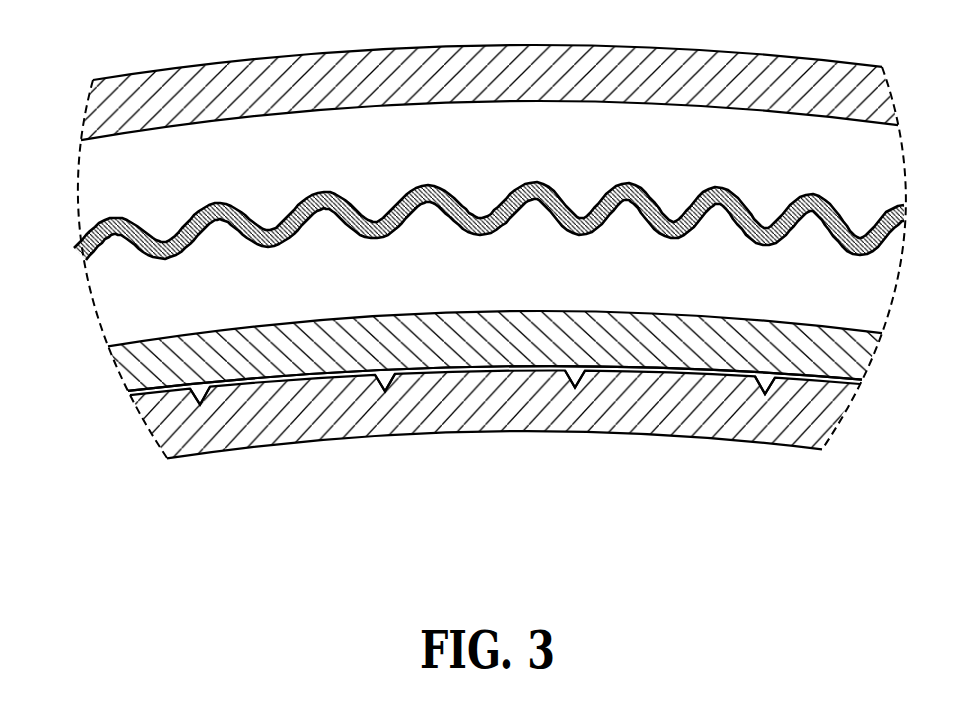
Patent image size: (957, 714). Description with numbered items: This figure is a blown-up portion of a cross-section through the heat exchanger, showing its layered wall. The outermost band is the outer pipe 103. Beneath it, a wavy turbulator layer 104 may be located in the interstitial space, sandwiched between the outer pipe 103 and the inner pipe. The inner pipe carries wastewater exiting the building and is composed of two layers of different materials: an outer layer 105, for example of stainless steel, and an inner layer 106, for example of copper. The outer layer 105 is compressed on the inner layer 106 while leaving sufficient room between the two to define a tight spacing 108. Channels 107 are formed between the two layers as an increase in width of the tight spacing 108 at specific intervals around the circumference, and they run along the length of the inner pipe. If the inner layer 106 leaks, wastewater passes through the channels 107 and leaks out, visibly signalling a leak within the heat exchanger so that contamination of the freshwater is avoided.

The outer pipe 103 is at (253, 61).
The turbulator layer 104 is at (117, 218).
The outer layer 105 is at (160, 337).
The inner layer 106 is at (217, 452).
The channels 107 is at (195, 392).
The tight spacing 108 is at (287, 377).